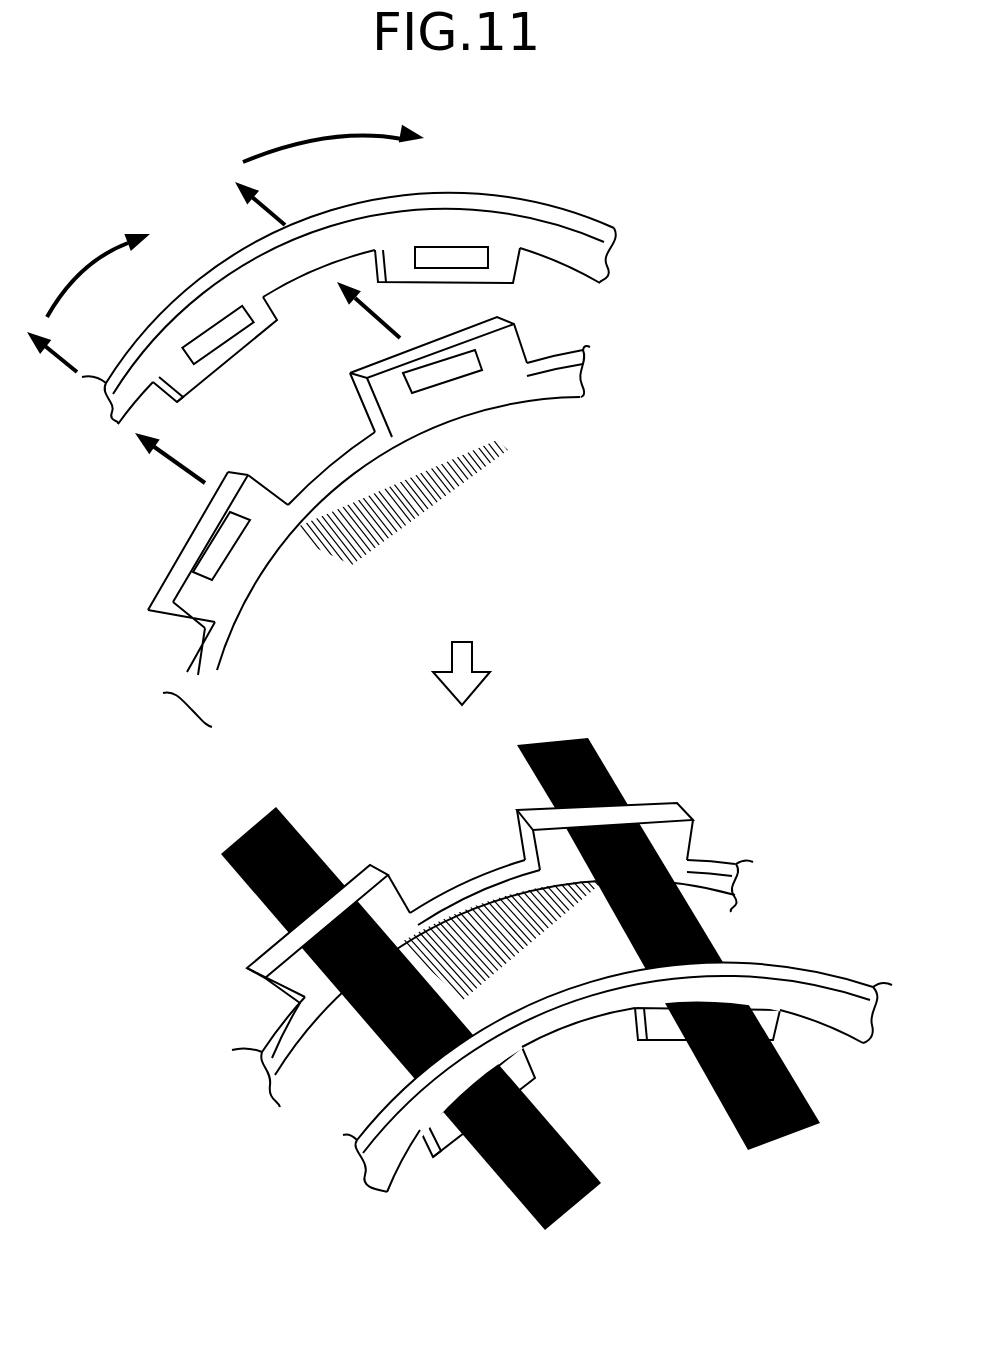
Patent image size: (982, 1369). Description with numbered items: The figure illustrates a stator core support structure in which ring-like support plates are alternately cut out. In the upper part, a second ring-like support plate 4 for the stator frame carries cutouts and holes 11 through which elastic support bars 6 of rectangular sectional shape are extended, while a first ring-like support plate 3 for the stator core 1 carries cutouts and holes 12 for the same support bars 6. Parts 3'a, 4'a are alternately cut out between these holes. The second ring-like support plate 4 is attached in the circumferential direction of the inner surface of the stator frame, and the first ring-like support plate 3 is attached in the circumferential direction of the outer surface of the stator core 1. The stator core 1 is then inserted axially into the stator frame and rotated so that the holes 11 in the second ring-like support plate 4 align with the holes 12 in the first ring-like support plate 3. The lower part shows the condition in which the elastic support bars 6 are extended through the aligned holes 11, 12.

The stator core 1 is at (397, 490).
The first ring-like support plate 3 is at (452, 696).
The cutout part of first ring-like support plate 3'a is at (480, 715).
The second ring-like support plate 4 is at (487, 673).
The cutout part of second ring-like support plate 4'a is at (525, 756).
The elastic support bar 6 is at (780, 1117).
The hole 11 is at (451, 258).
The hole 12 is at (447, 368).